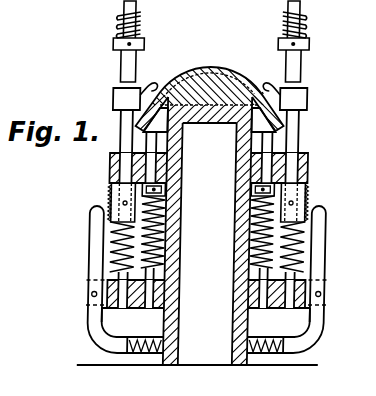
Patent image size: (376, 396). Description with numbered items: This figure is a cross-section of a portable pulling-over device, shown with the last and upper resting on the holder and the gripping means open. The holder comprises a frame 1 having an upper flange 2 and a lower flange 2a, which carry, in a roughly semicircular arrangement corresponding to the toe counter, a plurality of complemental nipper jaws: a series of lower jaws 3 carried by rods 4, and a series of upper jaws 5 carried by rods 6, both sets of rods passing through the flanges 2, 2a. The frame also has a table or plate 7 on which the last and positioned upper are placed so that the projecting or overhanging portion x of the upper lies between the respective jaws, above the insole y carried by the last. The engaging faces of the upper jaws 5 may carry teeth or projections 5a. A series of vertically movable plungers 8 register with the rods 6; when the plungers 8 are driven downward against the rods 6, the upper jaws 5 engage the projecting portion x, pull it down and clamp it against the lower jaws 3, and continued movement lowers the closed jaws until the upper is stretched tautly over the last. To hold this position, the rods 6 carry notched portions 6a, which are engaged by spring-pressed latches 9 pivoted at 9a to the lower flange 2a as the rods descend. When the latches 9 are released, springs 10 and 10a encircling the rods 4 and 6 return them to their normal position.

The frame 1 is at (198, 324).
The flange 2 is at (113, 169).
The lower flange 2a is at (188, 230).
The lower jaw 3 is at (208, 208).
The rod 4 is at (262, 163).
The upper jaw 5 is at (210, 99).
The teeth or projections 5a is at (318, 91).
The rod 6 is at (122, 125).
The notched portion 6a is at (320, 201).
The table or plate 7 is at (204, 121).
The plunger 8 is at (122, 64).
The spring-pressed latch 9 is at (97, 270).
The pivot 9a is at (339, 298).
The spring 10 is at (252, 242).
The spring 10a is at (335, 239).
The projecting portion of the upper x is at (318, 117).
The insole y is at (206, 100).